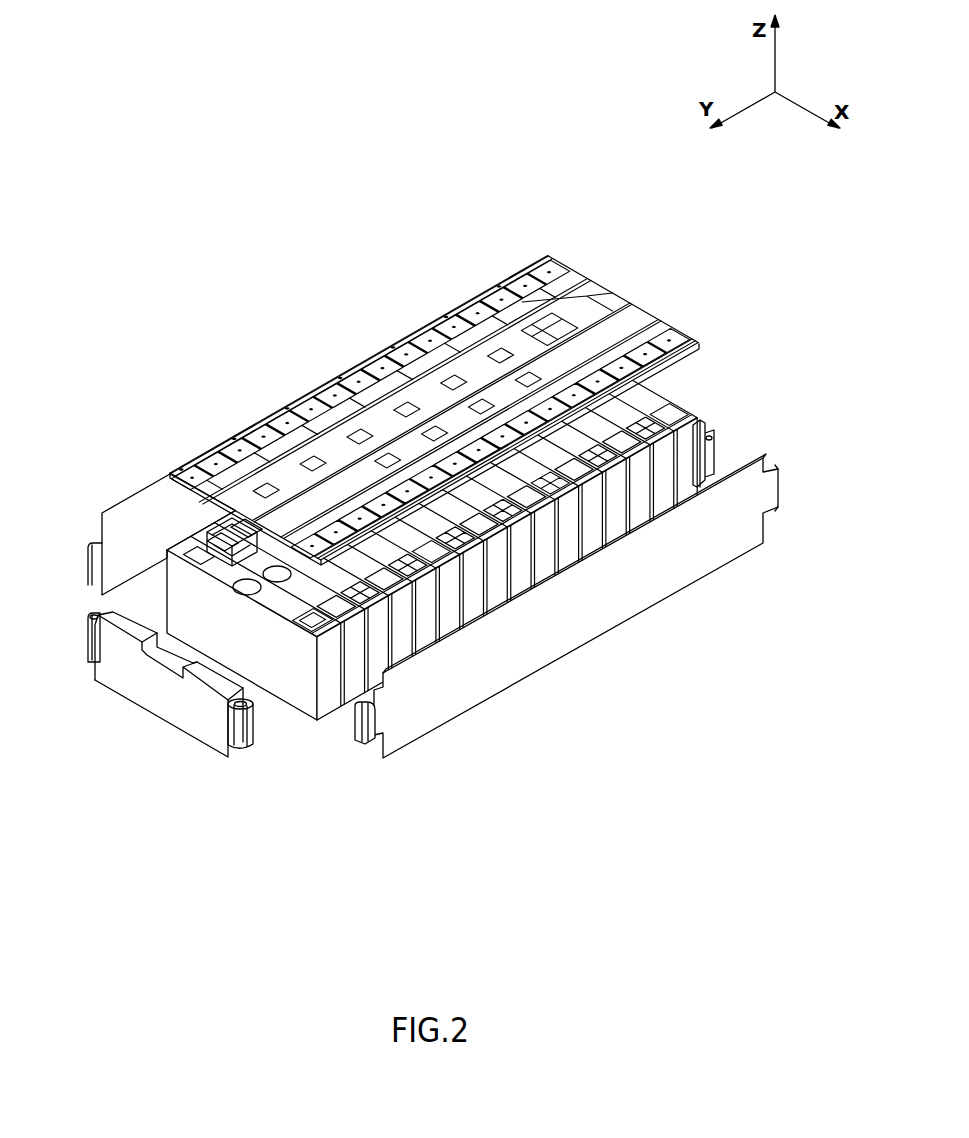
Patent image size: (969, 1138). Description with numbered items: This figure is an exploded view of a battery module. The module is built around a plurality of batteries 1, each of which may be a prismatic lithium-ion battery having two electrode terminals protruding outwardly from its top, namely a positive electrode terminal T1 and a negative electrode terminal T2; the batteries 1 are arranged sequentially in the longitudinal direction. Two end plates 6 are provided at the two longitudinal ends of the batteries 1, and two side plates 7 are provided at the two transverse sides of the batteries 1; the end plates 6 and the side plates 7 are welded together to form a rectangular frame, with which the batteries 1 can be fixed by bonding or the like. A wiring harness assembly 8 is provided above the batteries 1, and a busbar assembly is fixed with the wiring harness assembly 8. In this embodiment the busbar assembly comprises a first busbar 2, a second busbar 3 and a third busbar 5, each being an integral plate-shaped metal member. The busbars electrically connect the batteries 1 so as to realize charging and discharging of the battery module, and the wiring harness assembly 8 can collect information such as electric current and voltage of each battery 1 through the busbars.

The battery 1 is at (298, 697).
The first busbar 2 is at (307, 440).
The second busbar 3 is at (400, 380).
The third busbar 5 is at (607, 305).
The end plate 6 is at (177, 712).
The side plate 7 is at (118, 515).
The wiring harness assembly 8 is at (437, 323).
The positive electrode terminal T1 is at (193, 557).
The negative electrode terminal T2 is at (310, 622).